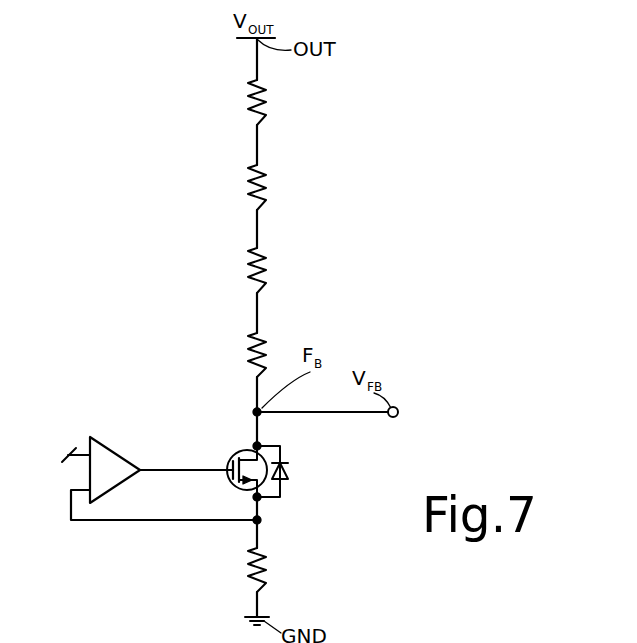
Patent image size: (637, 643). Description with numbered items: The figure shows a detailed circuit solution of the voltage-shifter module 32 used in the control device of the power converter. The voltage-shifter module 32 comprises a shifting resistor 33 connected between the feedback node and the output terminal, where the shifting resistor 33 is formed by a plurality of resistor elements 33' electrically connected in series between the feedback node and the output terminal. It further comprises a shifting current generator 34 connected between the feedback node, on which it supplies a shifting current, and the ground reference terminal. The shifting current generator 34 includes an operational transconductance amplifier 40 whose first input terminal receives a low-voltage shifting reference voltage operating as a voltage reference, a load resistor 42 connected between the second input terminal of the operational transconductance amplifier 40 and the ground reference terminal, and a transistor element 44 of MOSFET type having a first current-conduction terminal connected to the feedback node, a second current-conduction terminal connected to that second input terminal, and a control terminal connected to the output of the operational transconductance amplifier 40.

The voltage-shifter module 32 is at (330, 190).
The shifting resistor 33 is at (242, 262).
The resistor elements 33' is at (212, 228).
The shifting current generator 34 is at (113, 428).
The operational transconductance amplifier 40 is at (133, 462).
The load resistor 42 is at (262, 574).
The transistor element 44 is at (232, 458).